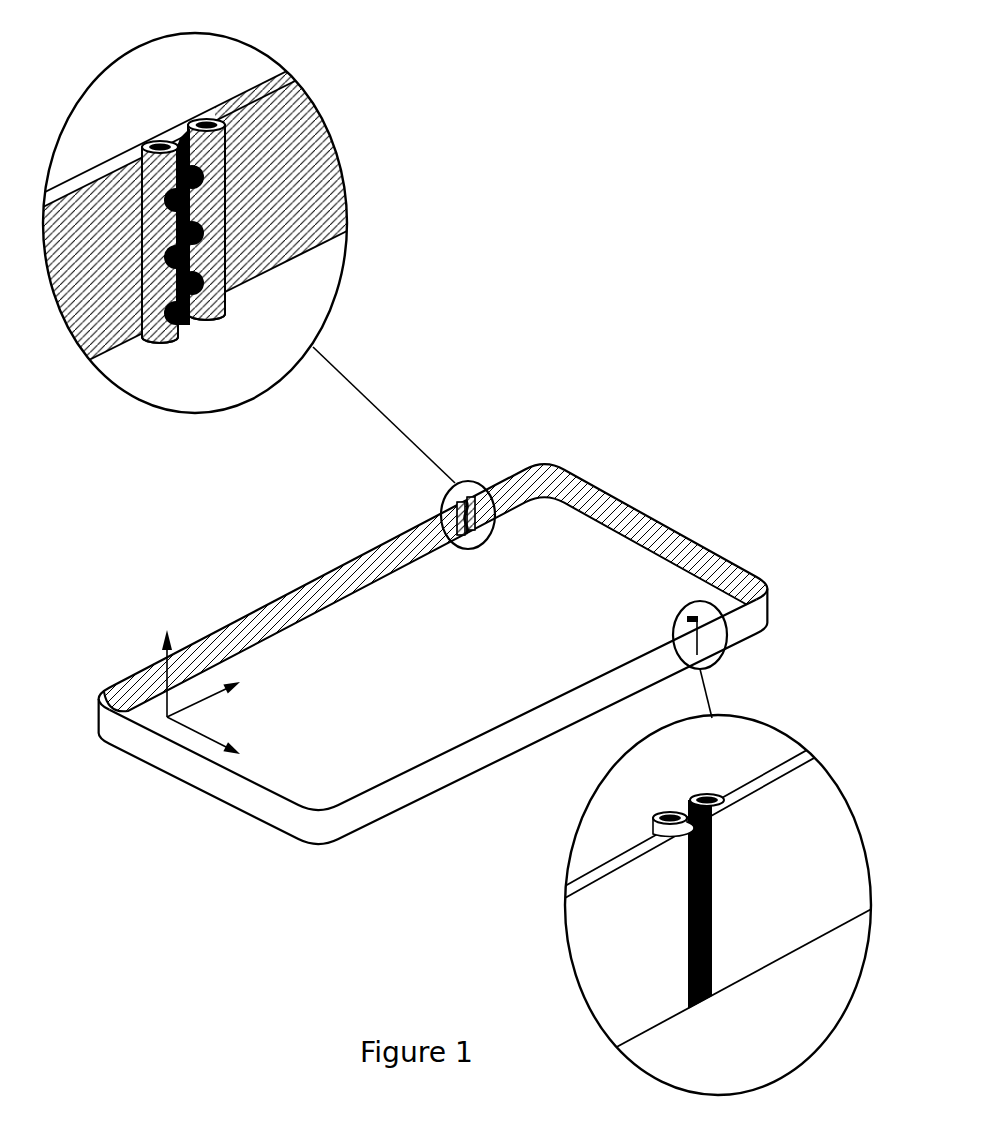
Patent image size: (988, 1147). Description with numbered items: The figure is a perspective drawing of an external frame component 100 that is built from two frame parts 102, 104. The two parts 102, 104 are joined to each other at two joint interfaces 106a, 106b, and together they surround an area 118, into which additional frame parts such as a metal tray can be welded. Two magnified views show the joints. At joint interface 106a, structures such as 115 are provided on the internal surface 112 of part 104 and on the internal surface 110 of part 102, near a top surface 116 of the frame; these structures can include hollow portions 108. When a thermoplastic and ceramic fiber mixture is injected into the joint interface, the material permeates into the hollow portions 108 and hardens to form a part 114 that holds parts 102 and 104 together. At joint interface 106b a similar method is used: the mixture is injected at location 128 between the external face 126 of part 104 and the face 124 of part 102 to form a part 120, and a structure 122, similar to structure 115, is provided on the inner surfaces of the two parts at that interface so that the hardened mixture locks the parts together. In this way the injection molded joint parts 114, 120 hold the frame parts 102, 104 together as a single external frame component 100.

The external frame component 100 is at (315, 518).
The frame part 102 is at (590, 480).
The frame part 104 is at (317, 588).
The joint interface 106a is at (463, 482).
The joint interface 106b is at (693, 603).
The hollow portions 108 is at (212, 125).
The internal surface 110 is at (278, 140).
The internal surface 112 is at (100, 292).
The joint part 114 is at (187, 132).
The structures 115 is at (157, 333).
The housing top surface 116 is at (245, 90).
The area 118 is at (338, 745).
The joint part 120 is at (657, 813).
The structure 122 is at (700, 797).
The face 124 is at (787, 878).
The external face 126 is at (620, 980).
The injection location 128 is at (708, 955).